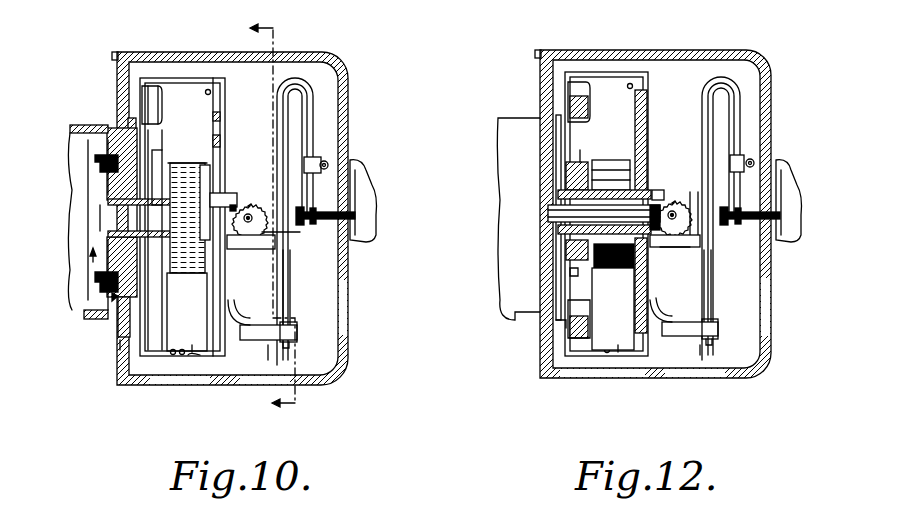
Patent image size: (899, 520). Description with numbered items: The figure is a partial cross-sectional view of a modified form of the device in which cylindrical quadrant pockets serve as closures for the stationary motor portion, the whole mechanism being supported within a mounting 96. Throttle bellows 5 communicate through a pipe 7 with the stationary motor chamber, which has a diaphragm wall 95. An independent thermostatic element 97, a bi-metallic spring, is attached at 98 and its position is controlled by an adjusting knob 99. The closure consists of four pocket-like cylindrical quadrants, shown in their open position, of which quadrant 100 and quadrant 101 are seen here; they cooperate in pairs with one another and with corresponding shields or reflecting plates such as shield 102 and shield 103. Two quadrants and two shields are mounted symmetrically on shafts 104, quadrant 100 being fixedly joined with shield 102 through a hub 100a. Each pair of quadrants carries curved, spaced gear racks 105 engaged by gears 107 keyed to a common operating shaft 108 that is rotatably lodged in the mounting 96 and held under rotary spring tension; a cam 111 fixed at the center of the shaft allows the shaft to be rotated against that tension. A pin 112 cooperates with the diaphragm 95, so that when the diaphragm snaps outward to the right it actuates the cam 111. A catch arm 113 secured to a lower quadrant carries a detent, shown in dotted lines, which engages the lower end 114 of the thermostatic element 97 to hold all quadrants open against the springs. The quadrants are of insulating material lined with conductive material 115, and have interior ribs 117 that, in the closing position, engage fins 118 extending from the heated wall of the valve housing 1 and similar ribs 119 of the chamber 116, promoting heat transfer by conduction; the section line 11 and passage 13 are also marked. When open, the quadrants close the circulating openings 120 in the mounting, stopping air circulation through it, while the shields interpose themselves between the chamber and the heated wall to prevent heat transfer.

In FIG. 10, the valve housing 1 is at (80, 143).
In FIG. 12, the valve housing 1 is at (510, 300).
In FIG. 10, the throttle bellows 5 is at (90, 222).
In FIG. 10, the pipe 7 is at (110, 214).
In FIG. 10, the section line 11 is at (273, 218).
In FIG. 10, the flow passage 13 is at (137, 242).
In FIG. 10, the diaphragm wall 95 is at (205, 256).
In FIG. 10, the mounting 96 is at (346, 56).
In FIG. 12, the mounting 96 is at (744, 380).
In FIG. 10, the independent thermostatic element 97 is at (303, 90).
In FIG. 12, the independent thermostatic element 97 is at (740, 112).
In FIG. 10, the attachment point 98 is at (327, 162).
In FIG. 12, the attachment point 98 is at (752, 160).
In FIG. 10, the adjusting knob 99 is at (372, 211).
In FIG. 12, the adjusting knob 99 is at (798, 212).
In FIG. 12, the pocket-like cylindrical quadrant 100 is at (605, 92).
In FIG. 12, the hub 100a is at (600, 190).
In FIG. 10, the pocket-like cylindrical quadrant 101 is at (178, 92).
In FIG. 12, the shield 102 is at (560, 318).
In FIG. 10, the shield 103 is at (122, 345).
In FIG. 12, the shaft 104 is at (556, 212).
In FIG. 10, the gear rack 105 is at (262, 238).
In FIG. 12, the gear rack 105 is at (700, 240).
In FIG. 10, the gear 107 is at (300, 233).
In FIG. 12, the gear 107 is at (668, 204).
In FIG. 10, the operating shaft 108 is at (255, 216).
In FIG. 12, the operating shaft 108 is at (672, 233).
In FIG. 10, the cam 111 is at (252, 212).
In FIG. 12, the cam 111 is at (690, 200).
In FIG. 10, the pin 112 is at (216, 196).
In FIG. 12, the pin 112 is at (660, 196).
In FIG. 10, the catch arm 113 is at (240, 338).
In FIG. 12, the catch arm 113 is at (690, 340).
In FIG. 10, the lower end 114 is at (292, 309).
In FIG. 12, the lower end 114 is at (713, 307).
In FIG. 10, the conductive lining 115 is at (211, 92).
In FIG. 12, the conductive lining 115 is at (633, 88).
In FIG. 10, the chamber 116 is at (182, 280).
In FIG. 10, the ribs 117 is at (148, 98).
In FIG. 12, the ribs 117 is at (575, 92).
In FIG. 10, the fins 118 is at (116, 298).
In FIG. 12, the fins 118 is at (572, 272).
In FIG. 10, the ribs 119 is at (163, 168).
In FIG. 12, the ribs 119 is at (575, 157).
In FIG. 10, the circulating openings 120 is at (194, 346).
In FIG. 12, the circulating openings 120 is at (620, 336).